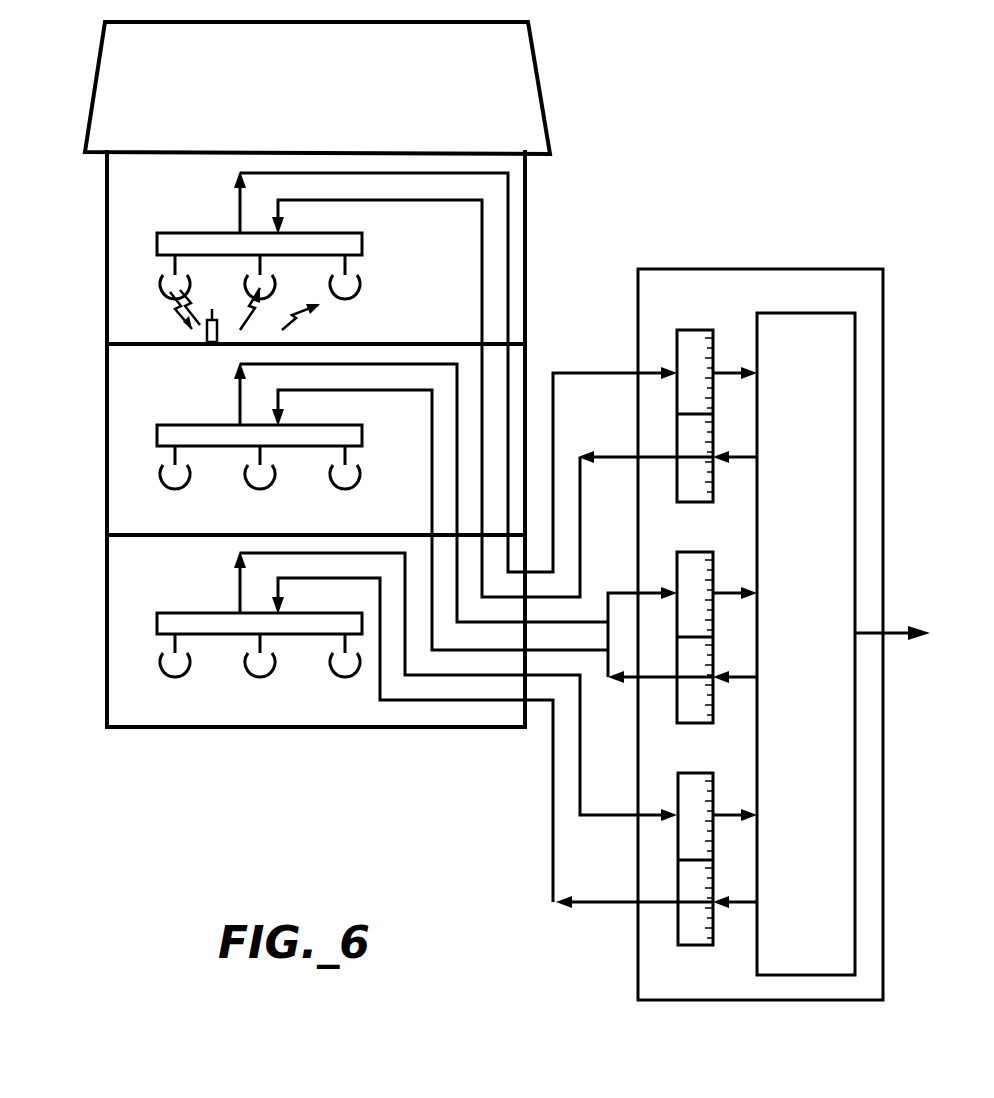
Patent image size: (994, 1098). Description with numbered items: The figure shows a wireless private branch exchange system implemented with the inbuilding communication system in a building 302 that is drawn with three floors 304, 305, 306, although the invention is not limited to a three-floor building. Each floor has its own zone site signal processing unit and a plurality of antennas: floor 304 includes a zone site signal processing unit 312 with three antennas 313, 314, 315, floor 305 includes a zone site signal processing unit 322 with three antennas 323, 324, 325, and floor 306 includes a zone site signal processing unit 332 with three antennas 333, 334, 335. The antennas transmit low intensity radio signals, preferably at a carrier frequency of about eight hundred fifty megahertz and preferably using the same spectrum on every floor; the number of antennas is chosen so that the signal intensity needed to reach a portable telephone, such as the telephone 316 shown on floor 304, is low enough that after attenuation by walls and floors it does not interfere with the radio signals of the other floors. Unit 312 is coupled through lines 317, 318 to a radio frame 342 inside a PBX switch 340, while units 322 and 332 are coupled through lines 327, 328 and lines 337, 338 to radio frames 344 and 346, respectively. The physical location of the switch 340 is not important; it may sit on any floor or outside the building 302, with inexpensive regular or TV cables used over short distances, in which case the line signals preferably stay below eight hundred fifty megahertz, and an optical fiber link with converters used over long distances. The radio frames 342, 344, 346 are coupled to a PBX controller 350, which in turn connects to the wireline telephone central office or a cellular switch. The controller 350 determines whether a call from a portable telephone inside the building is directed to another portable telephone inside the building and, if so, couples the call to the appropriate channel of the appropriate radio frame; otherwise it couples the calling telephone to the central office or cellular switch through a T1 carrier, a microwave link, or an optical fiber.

The building 302 is at (103, 44).
The floor 304 is at (107, 255).
The floor 305 is at (107, 440).
The floor 306 is at (107, 622).
The zone site signal processing unit 312 is at (335, 233).
The antenna 313 is at (188, 281).
The antenna 314 is at (272, 281).
The antenna 315 is at (358, 281).
The portable telephone 316 is at (205, 340).
The line 317 is at (314, 200).
The line 318 is at (240, 216).
The zone site signal processing unit 322 is at (335, 425).
The antenna 323 is at (188, 471).
The antenna 324 is at (272, 471).
The antenna 325 is at (358, 471).
The line 327 is at (314, 390).
The line 328 is at (240, 406).
The zone site signal processing unit 332 is at (300, 613).
The antenna 333 is at (188, 659).
The antenna 334 is at (272, 659).
The antenna 335 is at (357, 654).
The line 337 is at (314, 578).
The line 338 is at (240, 594).
The PBX switch 340 is at (773, 269).
The radio frame 342 is at (702, 330).
The radio frame 344 is at (705, 552).
The radio frame 346 is at (703, 773).
The PBX controller 350 is at (797, 313).